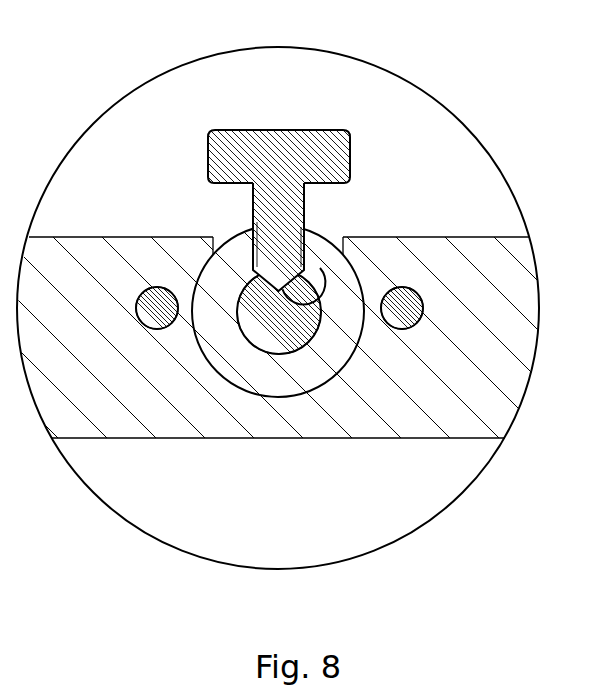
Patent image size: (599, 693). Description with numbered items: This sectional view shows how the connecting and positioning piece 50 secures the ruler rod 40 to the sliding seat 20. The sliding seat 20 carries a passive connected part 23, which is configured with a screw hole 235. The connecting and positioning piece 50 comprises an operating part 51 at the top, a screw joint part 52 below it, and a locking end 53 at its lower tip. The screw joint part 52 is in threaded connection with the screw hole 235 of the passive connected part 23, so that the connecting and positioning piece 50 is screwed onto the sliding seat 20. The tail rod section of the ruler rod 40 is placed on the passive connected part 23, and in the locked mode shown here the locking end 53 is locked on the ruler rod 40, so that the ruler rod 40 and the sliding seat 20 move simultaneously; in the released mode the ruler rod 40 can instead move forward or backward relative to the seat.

The sliding seat 20 is at (490, 248).
The passive connected part 23 is at (226, 290).
The screw hole 235 is at (257, 240).
The ruler rod 40 is at (251, 334).
The connecting and positioning piece 50 is at (332, 164).
The operating part 51 is at (352, 163).
The screw joint part 52 is at (304, 227).
The locking end 53 is at (321, 269).